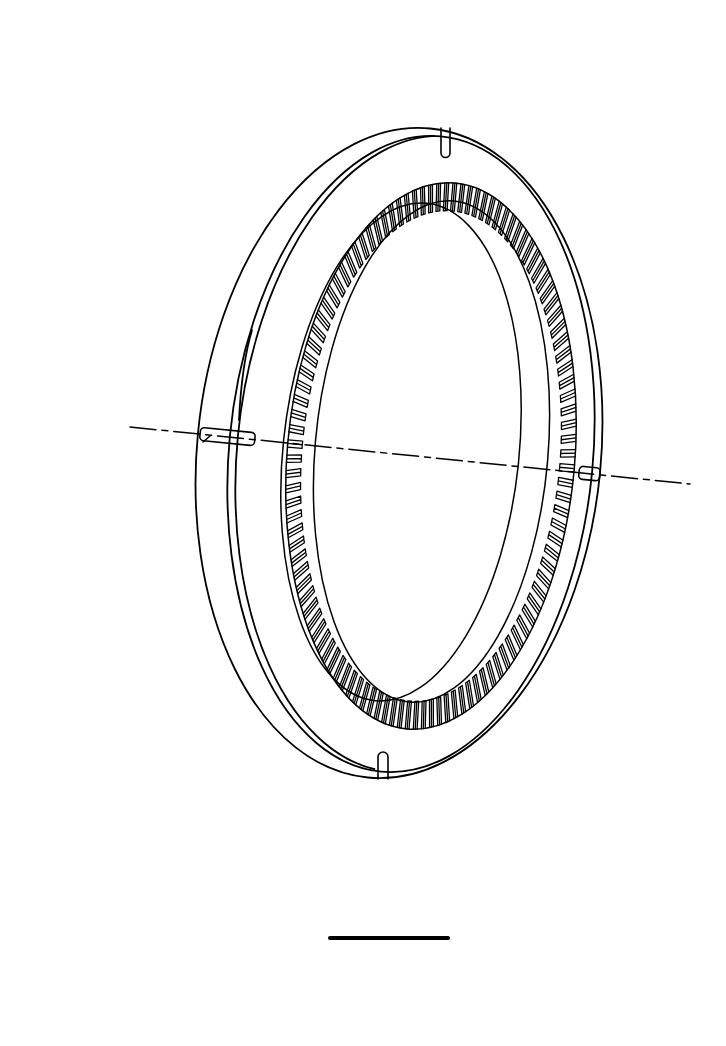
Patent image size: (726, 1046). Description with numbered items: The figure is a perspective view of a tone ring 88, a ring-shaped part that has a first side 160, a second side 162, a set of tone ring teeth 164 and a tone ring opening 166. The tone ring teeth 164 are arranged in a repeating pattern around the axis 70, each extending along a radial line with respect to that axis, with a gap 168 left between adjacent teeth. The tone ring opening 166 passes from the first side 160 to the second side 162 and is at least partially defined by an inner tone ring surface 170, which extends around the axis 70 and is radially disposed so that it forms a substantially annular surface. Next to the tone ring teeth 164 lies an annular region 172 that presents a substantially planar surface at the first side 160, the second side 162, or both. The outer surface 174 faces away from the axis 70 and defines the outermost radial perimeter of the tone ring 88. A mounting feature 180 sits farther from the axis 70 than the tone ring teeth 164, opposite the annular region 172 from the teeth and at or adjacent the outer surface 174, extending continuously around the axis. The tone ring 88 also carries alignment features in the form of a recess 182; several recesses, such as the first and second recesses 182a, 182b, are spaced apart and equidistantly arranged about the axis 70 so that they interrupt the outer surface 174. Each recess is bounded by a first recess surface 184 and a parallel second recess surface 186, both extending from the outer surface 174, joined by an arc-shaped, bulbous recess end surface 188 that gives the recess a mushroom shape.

The tone ring 88 is at (612, 128).
The first side 160 is at (313, 295).
The second side 162 is at (295, 186).
The set of tone ring teeth 164 is at (522, 229).
The tone ring opening 166 is at (416, 338).
The gap 168 is at (545, 281).
The inner tone ring surface 170 is at (522, 300).
The annular region 172 is at (388, 168).
The outer surface 174 is at (276, 243).
The mounting feature 180 is at (257, 339).
The recess 182 is at (190, 424).
The first recess 182a is at (452, 122).
The second recess 182b is at (387, 788).
The first recess surface 184 is at (201, 429).
The second recess surface 186 is at (200, 440).
The recess end surface 188 is at (290, 440).
The axis 70 is at (648, 478).